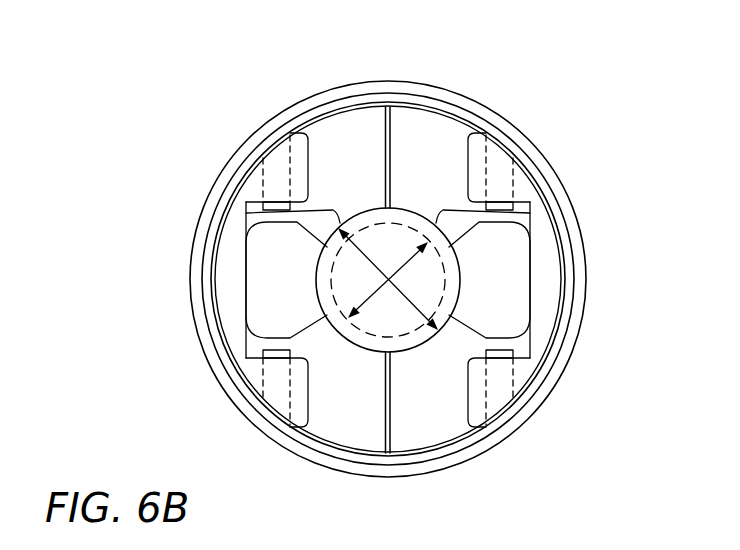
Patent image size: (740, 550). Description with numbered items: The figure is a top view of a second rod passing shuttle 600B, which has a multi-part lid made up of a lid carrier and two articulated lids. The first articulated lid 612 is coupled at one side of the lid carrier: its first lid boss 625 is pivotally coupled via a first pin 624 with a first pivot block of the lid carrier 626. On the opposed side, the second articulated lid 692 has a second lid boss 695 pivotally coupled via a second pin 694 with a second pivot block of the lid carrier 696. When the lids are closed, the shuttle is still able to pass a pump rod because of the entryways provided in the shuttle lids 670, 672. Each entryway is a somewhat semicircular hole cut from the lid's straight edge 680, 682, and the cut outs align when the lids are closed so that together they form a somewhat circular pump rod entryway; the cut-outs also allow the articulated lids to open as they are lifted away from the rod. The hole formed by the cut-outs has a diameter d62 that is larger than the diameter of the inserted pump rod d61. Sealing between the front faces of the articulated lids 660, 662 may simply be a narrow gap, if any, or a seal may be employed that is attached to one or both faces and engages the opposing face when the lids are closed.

The rod passing shuttle (top view) 600B is at (212, 92).
The front face of articulated lid 662 is at (391, 128).
The front face of articulated lid 660 is at (387, 433).
The second articulated lid 692 is at (416, 157).
The first articulated lid 612 is at (359, 402).
The straight edge of lid 680 is at (384, 172).
The straight edge of lid 682 is at (392, 172).
The entryway in shuttle lid 670 is at (246, 213).
The entryway in shuttle lid 672 is at (530, 213).
The first lid boss 625 is at (286, 280).
The second lid boss 695 is at (489, 280).
The diameter of inserted pump rod d61 is at (322, 290).
The diameter of entryway hole d62 is at (454, 290).
The first pin 624 is at (246, 350).
The first pivot block of the lid carrier 626 is at (297, 395).
The second pin 694 is at (530, 350).
The second pivot block of the lid carrier 696 is at (479, 395).